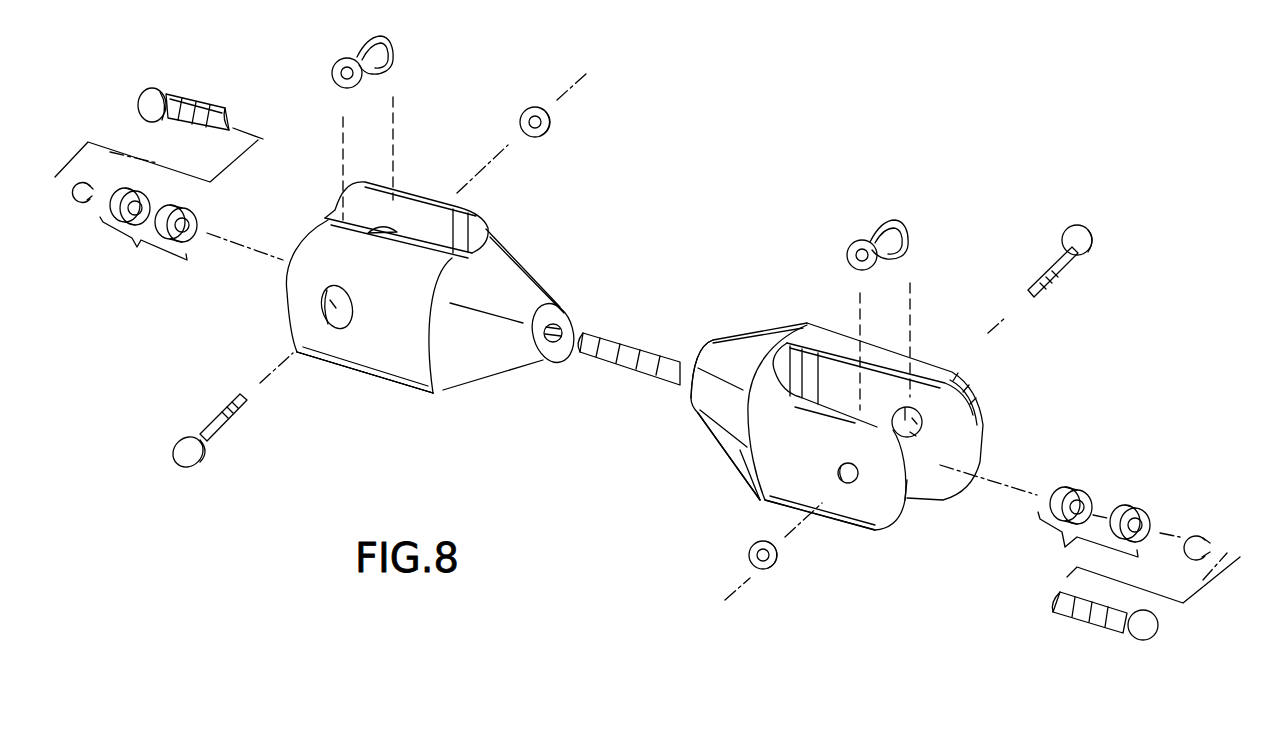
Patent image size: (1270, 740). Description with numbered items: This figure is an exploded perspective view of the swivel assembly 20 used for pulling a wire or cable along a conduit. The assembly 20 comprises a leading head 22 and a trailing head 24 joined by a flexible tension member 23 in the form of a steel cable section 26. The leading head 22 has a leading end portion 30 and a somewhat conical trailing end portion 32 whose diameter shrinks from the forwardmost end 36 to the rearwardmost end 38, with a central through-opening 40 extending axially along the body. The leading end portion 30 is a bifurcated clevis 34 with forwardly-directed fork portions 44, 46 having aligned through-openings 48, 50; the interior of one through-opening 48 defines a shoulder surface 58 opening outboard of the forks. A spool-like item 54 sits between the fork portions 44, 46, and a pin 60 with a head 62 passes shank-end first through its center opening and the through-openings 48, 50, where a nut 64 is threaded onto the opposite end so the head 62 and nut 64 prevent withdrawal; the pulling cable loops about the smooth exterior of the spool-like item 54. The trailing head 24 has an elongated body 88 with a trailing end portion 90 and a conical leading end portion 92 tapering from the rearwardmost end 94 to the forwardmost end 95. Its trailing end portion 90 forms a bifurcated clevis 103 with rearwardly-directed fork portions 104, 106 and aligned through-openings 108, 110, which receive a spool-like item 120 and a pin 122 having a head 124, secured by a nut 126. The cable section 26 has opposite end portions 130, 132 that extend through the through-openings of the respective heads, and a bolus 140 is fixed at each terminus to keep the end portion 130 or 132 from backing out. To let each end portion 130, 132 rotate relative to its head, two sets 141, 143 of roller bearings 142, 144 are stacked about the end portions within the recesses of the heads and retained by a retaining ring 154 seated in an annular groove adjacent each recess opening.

The swivel assembly 20 is at (935, 238).
The leading head 22 is at (410, 269).
The flexible tension member 23 is at (695, 286).
The trailing head 24 is at (752, 484).
The cable section 26 is at (205, 92).
The leading end portion 30 is at (320, 360).
The trailing end portion 32 is at (457, 370).
The bifurcated clevis 34 is at (357, 373).
The forwardmost end 36 is at (283, 298).
The rearwardmost end 38 is at (569, 315).
The central through-opening 40 is at (549, 347).
The fork portion 44 is at (400, 370).
The fork portion 46 is at (480, 212).
The through-opening 48 is at (337, 310).
The through-opening 50 is at (386, 231).
The spool-like item 54 is at (394, 50).
The shoulder surface 58 is at (313, 303).
The pin 60 is at (220, 427).
The head 62 is at (187, 453).
The nut 64 is at (537, 106).
The elongated body 88 is at (782, 323).
The trailing end portion 90 is at (984, 412).
The leading end portion 92 is at (700, 440).
The rearwardmost end 94 is at (905, 510).
The forwardmost end 95 is at (700, 340).
The bifurcated clevis 103 is at (873, 535).
The fork portion 104 is at (845, 515).
The fork portion 106 is at (933, 357).
The through-opening 108 is at (920, 435).
The through-opening 110 is at (838, 478).
The spool-like item 120 is at (877, 235).
The pin 122 is at (1062, 272).
The head 124 is at (1083, 226).
The nut 126 is at (768, 572).
The end portion 130 is at (258, 143).
The end portion 132 is at (1093, 627).
The bolus 140 is at (155, 87).
The bearing set 141 is at (137, 239).
The roller bearing 142 is at (110, 205).
The bearing set 143 is at (1079, 543).
The roller bearing 144 is at (197, 238).
The retaining ring 154 is at (85, 178).